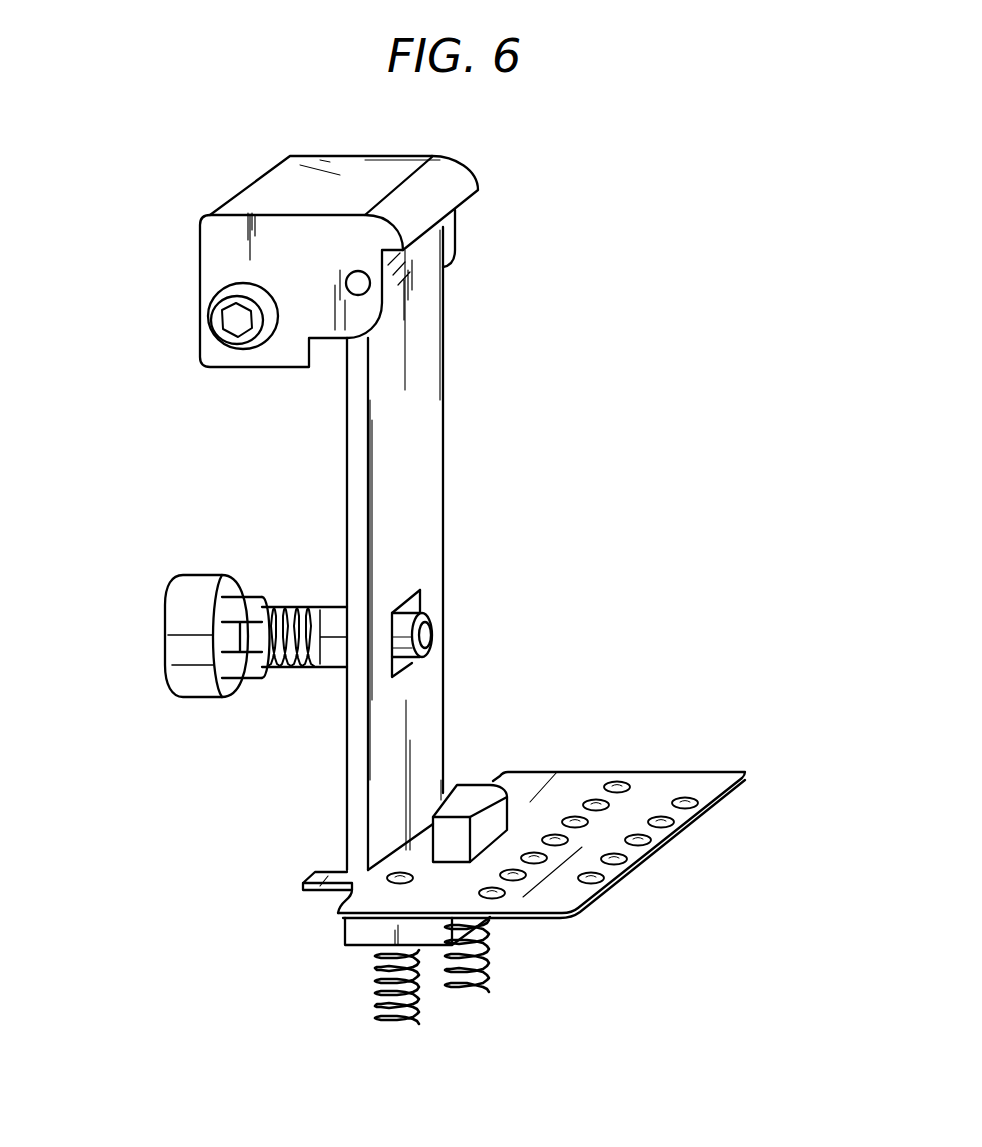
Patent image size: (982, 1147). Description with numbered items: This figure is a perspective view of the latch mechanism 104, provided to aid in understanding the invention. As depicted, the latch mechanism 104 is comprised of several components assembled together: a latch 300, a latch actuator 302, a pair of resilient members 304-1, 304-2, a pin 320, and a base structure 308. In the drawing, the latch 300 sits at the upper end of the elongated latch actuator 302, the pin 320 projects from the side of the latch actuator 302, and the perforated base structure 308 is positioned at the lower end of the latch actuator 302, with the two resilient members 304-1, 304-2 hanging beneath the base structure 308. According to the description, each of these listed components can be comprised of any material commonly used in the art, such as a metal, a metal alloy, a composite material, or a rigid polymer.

The latch mechanism 104 is at (578, 228).
The latch 300 is at (200, 222).
The latch actuator 302 is at (347, 502).
The resilient member 304-1 is at (418, 1010).
The resilient member 304-2 is at (487, 965).
The base structure 308 is at (668, 772).
The pin 320 is at (167, 622).